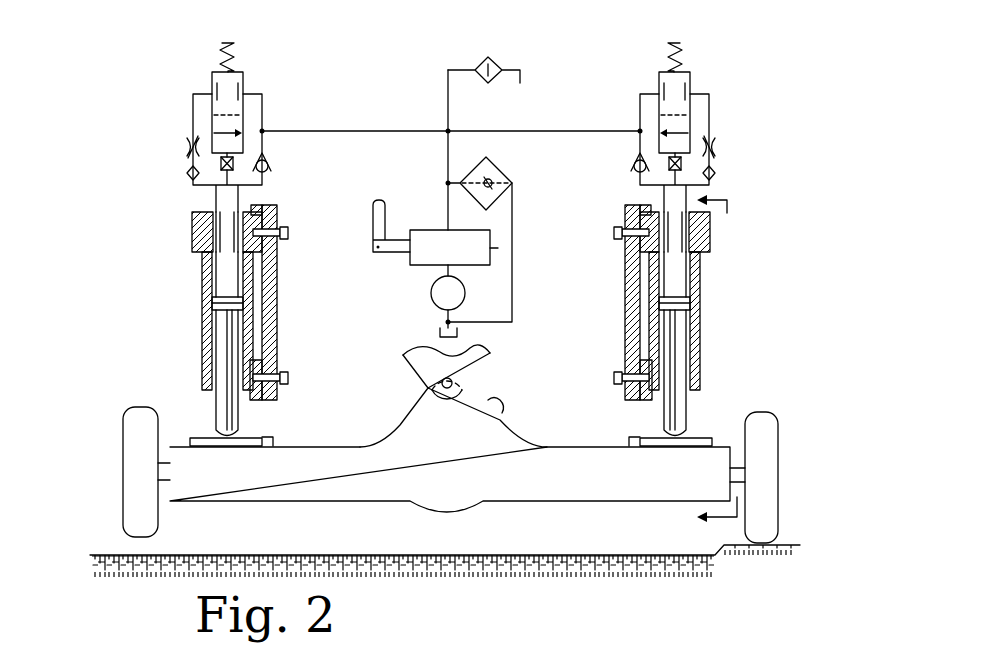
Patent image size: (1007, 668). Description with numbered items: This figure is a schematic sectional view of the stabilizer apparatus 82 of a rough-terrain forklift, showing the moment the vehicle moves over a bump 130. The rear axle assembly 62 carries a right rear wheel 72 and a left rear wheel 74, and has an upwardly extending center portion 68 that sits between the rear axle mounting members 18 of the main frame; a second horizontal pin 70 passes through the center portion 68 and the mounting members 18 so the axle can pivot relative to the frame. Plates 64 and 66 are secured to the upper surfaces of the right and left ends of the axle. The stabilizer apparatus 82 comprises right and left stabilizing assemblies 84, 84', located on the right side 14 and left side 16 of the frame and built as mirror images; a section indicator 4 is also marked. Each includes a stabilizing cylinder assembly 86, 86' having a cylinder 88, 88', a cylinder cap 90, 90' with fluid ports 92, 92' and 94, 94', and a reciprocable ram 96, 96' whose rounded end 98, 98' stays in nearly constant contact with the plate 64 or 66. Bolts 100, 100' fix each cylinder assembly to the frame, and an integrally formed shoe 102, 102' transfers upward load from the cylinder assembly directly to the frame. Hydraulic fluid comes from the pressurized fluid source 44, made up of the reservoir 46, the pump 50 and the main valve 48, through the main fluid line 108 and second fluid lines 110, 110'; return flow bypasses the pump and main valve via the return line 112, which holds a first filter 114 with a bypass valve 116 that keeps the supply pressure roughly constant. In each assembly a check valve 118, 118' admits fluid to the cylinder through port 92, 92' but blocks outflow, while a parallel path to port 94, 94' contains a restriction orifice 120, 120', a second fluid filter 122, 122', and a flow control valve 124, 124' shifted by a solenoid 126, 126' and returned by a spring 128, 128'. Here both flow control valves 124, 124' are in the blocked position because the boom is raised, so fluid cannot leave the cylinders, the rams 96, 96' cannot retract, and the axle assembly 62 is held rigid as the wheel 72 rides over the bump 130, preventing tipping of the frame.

The section line 4- 4 is at (712, 361).
The right side 14 is at (622, 328).
The left side 16 is at (279, 312).
The rear axle mounting members 18 is at (418, 376).
The pressurized hydraulic fluid source 44 is at (480, 296).
The fluid reservoir 46 is at (456, 333).
The main valve 48 is at (432, 230).
The pump 50 is at (432, 303).
The rear axle assembly 62 is at (420, 517).
The plate 64 is at (635, 440).
The plate 66 is at (268, 437).
The center portion 68 is at (497, 416).
The second horizontal pin 70 is at (443, 388).
The right rear wheel 72 is at (778, 452).
The left rear wheel 74 is at (150, 410).
The stabilizer apparatus 82 is at (358, 86).
The right stabilizing assembly 84 is at (778, 144).
The left stabilizing assembly 84' is at (171, 146).
The stabilizing cylinder assembly 86 is at (699, 324).
The stabilizing cylinder assembly 86' is at (186, 321).
The cylinder 88 is at (700, 388).
The cylinder 88' is at (189, 305).
The cylinder cap 90 is at (712, 247).
The cylinder cap 90' is at (176, 242).
The fluid port 92 is at (623, 217).
The fluid port 92' is at (294, 207).
The fluid port 94 is at (712, 225).
The fluid port 94' is at (192, 216).
The reciprocable ram 96 is at (692, 420).
The reciprocable ram 96' is at (195, 373).
The rounded end 98 is at (705, 448).
The rounded end 98' is at (212, 428).
The bolts 100 is at (613, 237).
The bolts 100' is at (303, 326).
The shoe 102 is at (627, 409).
The shoe 102' is at (313, 419).
The main fluid line 108 is at (448, 150).
The second fluid line 110 is at (610, 131).
The second fluid line 110' is at (355, 116).
The fluid return line 112 is at (512, 300).
The first filter 114 is at (468, 175).
The bypass valve 116 is at (490, 172).
The check valve 118 is at (632, 165).
The check valve 118' is at (292, 156).
The restriction orifice 120 is at (718, 152).
The restriction orifice 120' is at (166, 123).
The second fluid filter 122 is at (717, 177).
The second fluid filter 122' is at (157, 167).
The flow control valve 124 is at (692, 88).
The flow control valve 124' is at (204, 90).
The solenoid 126 is at (670, 178).
The solenoid 126' is at (268, 179).
The spring 128 is at (663, 65).
The spring 128' is at (256, 41).
The bump 130 is at (725, 548).